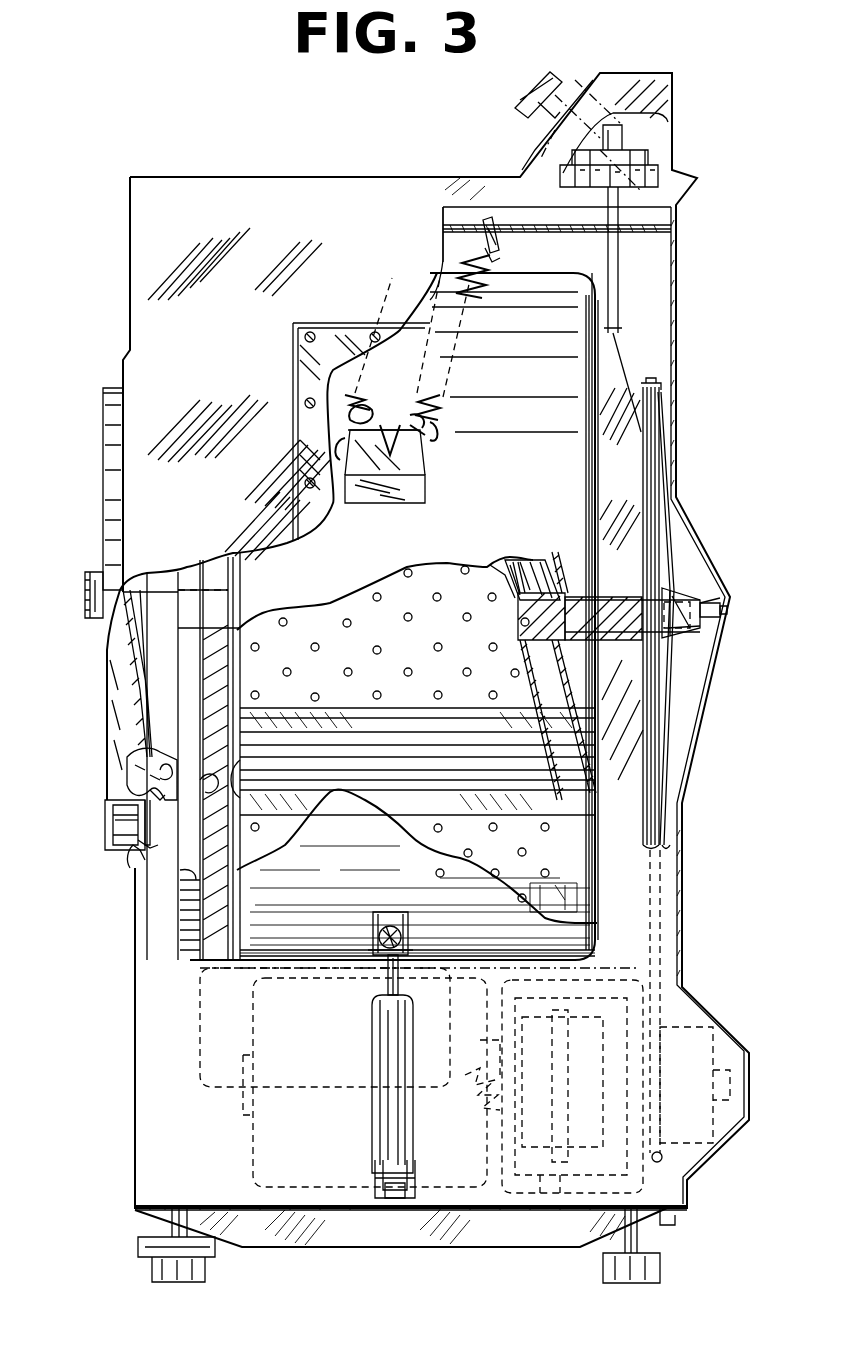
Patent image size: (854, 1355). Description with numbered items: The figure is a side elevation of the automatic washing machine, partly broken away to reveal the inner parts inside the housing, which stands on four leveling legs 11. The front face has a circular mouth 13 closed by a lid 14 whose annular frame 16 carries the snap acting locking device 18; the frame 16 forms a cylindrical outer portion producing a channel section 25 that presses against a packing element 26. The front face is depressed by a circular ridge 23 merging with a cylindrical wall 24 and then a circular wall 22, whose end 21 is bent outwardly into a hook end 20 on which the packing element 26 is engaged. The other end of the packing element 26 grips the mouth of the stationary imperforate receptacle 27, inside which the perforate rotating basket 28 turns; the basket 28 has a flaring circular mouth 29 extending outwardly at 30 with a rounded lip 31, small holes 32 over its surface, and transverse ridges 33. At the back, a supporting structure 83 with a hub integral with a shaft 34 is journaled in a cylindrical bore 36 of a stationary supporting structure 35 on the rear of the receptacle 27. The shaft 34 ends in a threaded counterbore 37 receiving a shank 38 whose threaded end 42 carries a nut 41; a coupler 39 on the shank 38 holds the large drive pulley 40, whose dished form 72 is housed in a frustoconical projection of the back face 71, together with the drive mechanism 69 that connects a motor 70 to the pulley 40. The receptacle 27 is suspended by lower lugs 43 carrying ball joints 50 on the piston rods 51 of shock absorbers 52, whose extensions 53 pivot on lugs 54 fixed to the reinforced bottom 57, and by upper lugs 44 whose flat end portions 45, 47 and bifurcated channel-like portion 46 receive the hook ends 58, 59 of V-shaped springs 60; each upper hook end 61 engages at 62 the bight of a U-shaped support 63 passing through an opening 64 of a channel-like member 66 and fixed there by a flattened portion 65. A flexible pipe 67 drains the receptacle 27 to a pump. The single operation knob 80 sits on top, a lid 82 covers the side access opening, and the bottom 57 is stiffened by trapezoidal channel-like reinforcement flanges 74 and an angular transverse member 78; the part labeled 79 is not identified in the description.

The leveling legs 11 is at (207, 1274).
The mouth 13 is at (170, 641).
The lid 14 is at (103, 725).
The annular frame 16 is at (107, 850).
The snap acting locking device 18 is at (85, 592).
The hook end 20 is at (140, 790).
The end of circular wall 21 is at (150, 797).
The circular wall 22 is at (152, 822).
The circular ridge 23 is at (125, 883).
The cylindrical wall 24 is at (152, 850).
The channel section 25 is at (112, 840).
The packing element 26 is at (152, 765).
The stationary cylindrical imperforate receptacle 27 is at (347, 836).
The rotating perforate basket 28 is at (522, 674).
The flaring circular mouth 29 is at (228, 676).
The outwardly extending portion of flaring mouth 30 is at (242, 795).
The rounded lip 31 is at (207, 795).
The small holes 32 is at (462, 600).
The transverse ridges 33 is at (357, 728).
The shaft 34 is at (576, 596).
The supporting stationary structure 35 is at (630, 508).
The cylindrical bore 36 is at (606, 596).
The counterbore 37 is at (683, 598).
The shank 38 is at (705, 600).
The coupler 39 is at (703, 630).
The drive pulley 40 is at (665, 656).
The nut 41 is at (722, 605).
The threaded end 42 is at (728, 611).
The lugs 43 is at (380, 910).
The upper lugs 44 is at (420, 486).
The flat end portion 45 is at (392, 425).
The intermediate channel-like portion 46 is at (430, 470).
The flat end portion 47 is at (388, 503).
The ball joint 50 is at (380, 937).
The piston rod 51 is at (388, 985).
The shock absorber 52 is at (395, 1050).
The extension 53 is at (415, 1160).
The lugs 54 is at (412, 1188).
The bottom 57 is at (278, 1205).
The hook end 58 is at (343, 461).
The hook end 59 is at (427, 443).
The springs 60 is at (440, 404).
The upper hook end 61 is at (492, 262).
The engagement point 62 is at (502, 247).
The U-shaped support 63 is at (482, 238).
The opening 64 is at (500, 236).
The flattened portion 65 is at (460, 212).
The channel-like member 66 is at (518, 215).
The flexible pipe 67 is at (465, 1100).
The drive mechanism 69 is at (608, 965).
The motor 70 is at (262, 1150).
The back face 71 is at (687, 915).
The dished form 72 is at (668, 718).
The channel-like reinforcement flange 74 is at (362, 1248).
The angular transverse member 78 is at (677, 1220).
The support rail 79 is at (578, 228).
The single operation knob 80 is at (512, 100).
The lid 82 is at (360, 325).
The supporting structure 83 is at (502, 572).